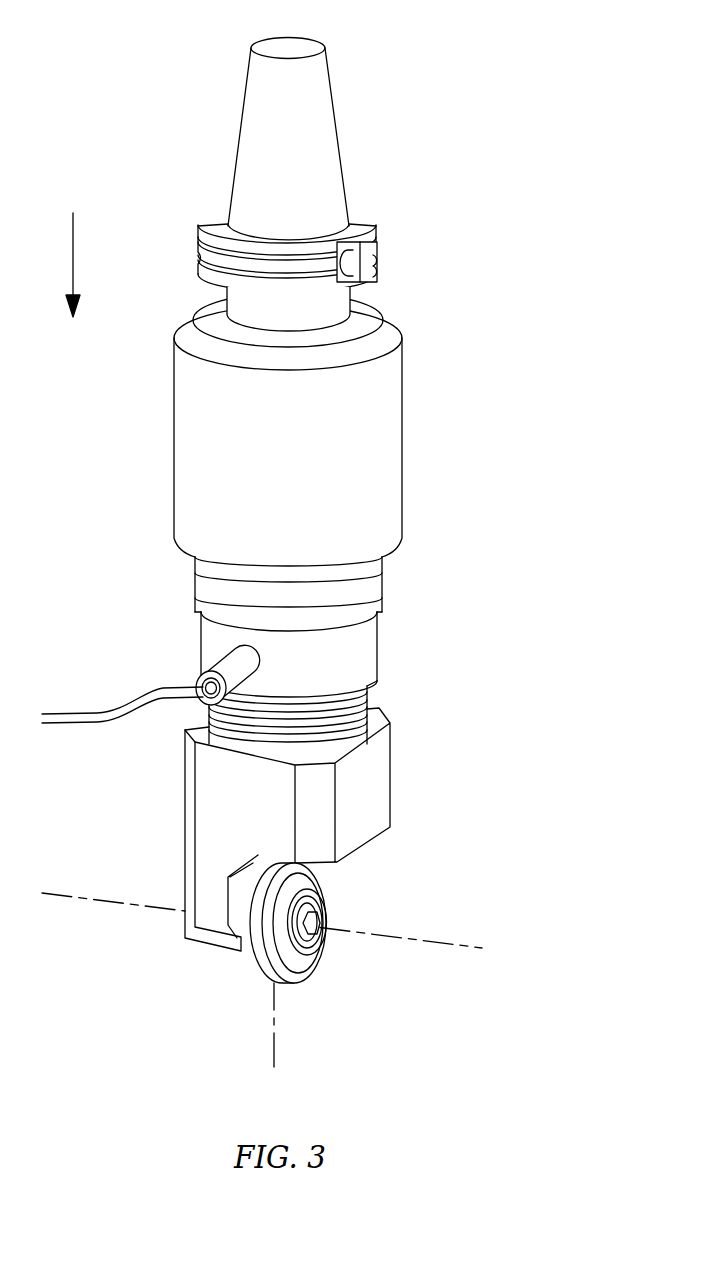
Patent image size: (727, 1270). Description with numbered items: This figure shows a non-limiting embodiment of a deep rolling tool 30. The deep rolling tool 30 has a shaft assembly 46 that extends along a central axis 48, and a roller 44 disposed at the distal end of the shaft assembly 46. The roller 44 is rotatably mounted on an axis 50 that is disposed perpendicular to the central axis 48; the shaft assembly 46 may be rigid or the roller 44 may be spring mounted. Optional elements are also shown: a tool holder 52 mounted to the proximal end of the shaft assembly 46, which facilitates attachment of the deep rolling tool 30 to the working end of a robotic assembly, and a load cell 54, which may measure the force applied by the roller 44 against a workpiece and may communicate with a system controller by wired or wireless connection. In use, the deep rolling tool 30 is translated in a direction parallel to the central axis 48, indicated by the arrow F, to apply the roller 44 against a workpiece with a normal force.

The deep rolling tool 30 is at (334, 553).
The roller 44 is at (260, 958).
The shaft assembly 46 is at (412, 438).
The central axis 48 is at (277, 1058).
The axis 50 is at (455, 940).
The tool holder 52 is at (391, 224).
The load cell 54 is at (214, 642).
The force F is at (73, 260).